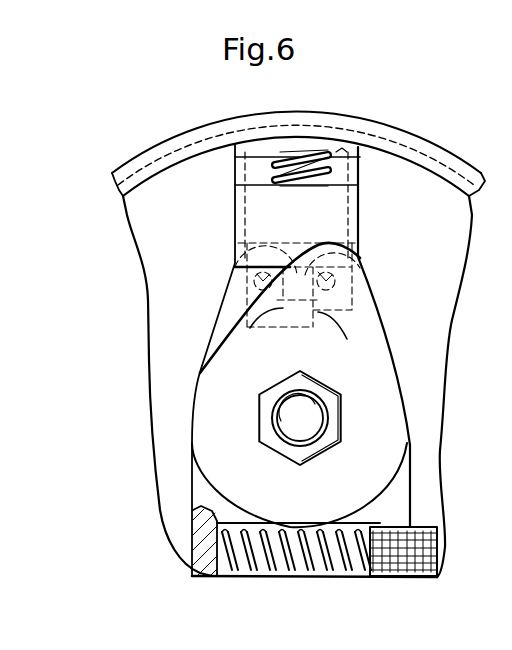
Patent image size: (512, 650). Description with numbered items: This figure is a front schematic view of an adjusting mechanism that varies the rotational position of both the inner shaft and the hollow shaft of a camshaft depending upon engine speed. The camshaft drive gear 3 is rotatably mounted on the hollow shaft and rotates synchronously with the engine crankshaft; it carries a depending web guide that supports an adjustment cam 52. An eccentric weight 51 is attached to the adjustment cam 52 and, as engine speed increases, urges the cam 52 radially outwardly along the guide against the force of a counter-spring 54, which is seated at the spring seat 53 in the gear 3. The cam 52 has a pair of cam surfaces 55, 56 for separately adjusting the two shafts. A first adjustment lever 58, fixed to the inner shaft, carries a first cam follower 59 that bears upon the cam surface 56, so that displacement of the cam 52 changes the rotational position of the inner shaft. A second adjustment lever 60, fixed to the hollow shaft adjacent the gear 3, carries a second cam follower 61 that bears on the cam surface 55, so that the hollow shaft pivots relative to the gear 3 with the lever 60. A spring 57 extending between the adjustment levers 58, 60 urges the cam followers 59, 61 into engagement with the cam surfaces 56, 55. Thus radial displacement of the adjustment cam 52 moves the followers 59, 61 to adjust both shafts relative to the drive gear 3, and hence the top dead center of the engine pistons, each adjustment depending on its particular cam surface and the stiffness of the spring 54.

The camshaft drive gear 3 is at (322, 112).
The eccentric weight 51 is at (333, 205).
The adjustment cam 52 is at (305, 327).
The spring seat 53 is at (336, 150).
The counter-spring 54 is at (359, 170).
The cam surface 55 is at (250, 328).
The cam surface 56 is at (334, 328).
The spring 57 is at (318, 525).
The first adjustment lever 58 is at (395, 355).
The first cam follower 59 is at (345, 276).
The second adjustment lever 60 is at (217, 316).
The second cam follower 61 is at (232, 272).